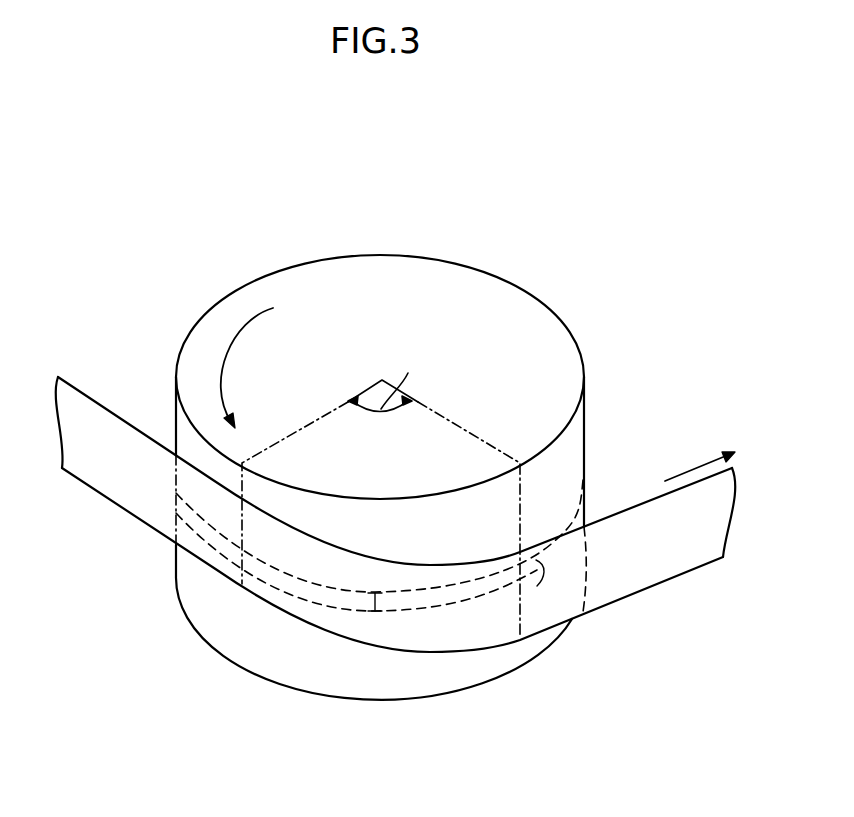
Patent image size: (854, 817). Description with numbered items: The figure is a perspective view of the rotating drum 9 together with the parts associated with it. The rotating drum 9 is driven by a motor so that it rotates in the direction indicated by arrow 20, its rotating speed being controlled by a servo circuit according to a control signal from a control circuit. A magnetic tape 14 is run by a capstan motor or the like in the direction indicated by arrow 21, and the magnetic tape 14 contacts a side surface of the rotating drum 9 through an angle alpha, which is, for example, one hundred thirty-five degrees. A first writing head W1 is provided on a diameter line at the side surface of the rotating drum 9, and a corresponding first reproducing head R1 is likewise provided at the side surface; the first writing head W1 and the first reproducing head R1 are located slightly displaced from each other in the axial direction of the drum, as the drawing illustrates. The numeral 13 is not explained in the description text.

The rotating drum 9 is at (592, 291).
The magnetic head 13 is at (540, 572).
The magnetic tape 14 is at (644, 578).
The arrow 20 is at (217, 363).
The arrow 21 is at (688, 468).
The first writing head W1 is at (375, 590).
The first reproducing head R1 is at (540, 560).